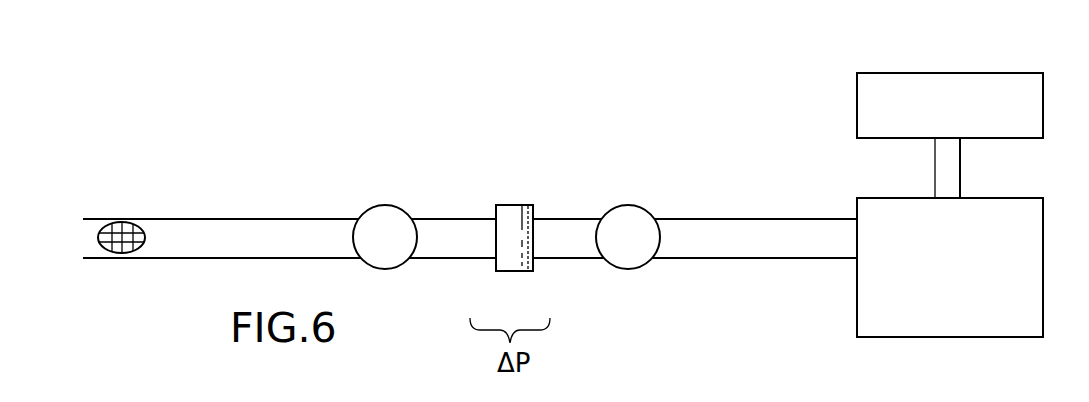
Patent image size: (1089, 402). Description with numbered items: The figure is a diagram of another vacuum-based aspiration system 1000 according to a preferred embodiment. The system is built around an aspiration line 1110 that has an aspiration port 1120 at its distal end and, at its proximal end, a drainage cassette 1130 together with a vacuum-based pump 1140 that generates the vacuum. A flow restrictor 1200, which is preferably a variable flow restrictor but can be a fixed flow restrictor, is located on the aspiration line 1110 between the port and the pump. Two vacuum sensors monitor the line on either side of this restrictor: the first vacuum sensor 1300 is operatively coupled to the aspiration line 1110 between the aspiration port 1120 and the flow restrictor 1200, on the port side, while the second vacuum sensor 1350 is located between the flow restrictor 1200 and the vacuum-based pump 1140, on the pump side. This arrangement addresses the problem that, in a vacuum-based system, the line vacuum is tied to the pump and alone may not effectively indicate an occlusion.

The vacuum-based aspiration system 1000 is at (433, 120).
The aspiration line 1110 is at (232, 218).
The aspiration port 1120 is at (128, 222).
The drainage cassette 1130 is at (885, 198).
The vacuum-based pump 1140 is at (862, 103).
The flow restrictor 1200 is at (516, 205).
The first vacuum sensor 1300 is at (384, 205).
The second vacuum sensor 1350 is at (628, 205).